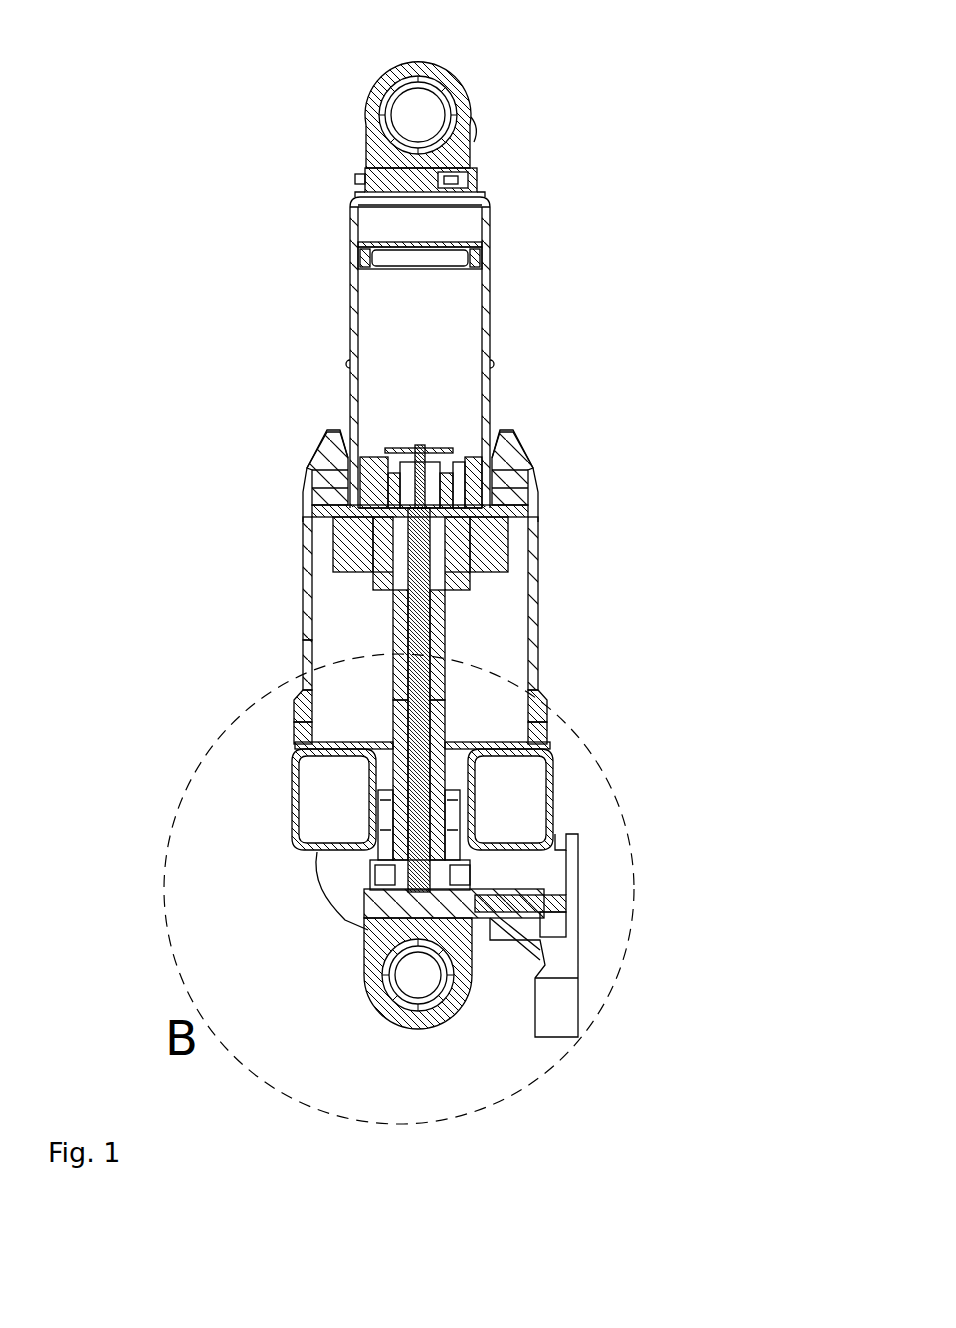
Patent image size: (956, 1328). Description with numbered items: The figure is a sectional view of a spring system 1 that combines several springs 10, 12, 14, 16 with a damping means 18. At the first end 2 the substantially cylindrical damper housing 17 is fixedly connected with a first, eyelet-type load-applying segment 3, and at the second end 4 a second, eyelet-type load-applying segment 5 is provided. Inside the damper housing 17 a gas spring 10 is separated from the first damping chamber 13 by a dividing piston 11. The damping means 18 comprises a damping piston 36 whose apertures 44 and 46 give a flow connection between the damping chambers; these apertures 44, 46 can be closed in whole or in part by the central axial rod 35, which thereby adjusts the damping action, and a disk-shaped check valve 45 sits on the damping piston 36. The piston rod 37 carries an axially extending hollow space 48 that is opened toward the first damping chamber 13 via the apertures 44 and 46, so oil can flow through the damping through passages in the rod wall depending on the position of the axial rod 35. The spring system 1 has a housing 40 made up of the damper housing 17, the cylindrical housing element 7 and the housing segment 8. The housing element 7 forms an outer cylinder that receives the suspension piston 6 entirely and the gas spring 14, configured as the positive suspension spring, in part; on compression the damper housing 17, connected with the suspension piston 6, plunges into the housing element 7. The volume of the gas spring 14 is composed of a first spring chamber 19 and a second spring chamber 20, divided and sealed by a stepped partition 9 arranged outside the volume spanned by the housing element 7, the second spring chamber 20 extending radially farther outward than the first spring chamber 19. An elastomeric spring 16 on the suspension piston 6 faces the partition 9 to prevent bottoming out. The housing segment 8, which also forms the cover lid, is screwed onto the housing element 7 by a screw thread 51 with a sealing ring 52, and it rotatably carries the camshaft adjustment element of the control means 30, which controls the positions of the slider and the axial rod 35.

The spring system 1 is at (222, 95).
The first end 2 is at (360, 78).
The first eyelet-type load-applying segment 3 is at (380, 55).
The second end 4 is at (350, 1020).
The second eyelet-type load-applying segment 5 is at (370, 1045).
The suspension piston 6 is at (515, 512).
The housing element 7 is at (300, 625).
The housing segment 8 is at (280, 846).
The partition 9 is at (360, 775).
The gas spring 10 is at (382, 227).
The dividing piston 11 is at (460, 263).
The spring 12 is at (320, 480).
The first damping chamber 13 is at (373, 328).
The gas spring 14 is at (325, 580).
The elastomeric spring 16 is at (500, 575).
The damper housing 17 is at (345, 362).
The damping means 18 is at (287, 273).
The first spring chamber 19 is at (313, 668).
The second spring chamber 20 is at (315, 795).
The control means 30 is at (605, 909).
The axial rod 35 is at (470, 690).
The damping piston 36 is at (370, 455).
The piston rod 37 is at (445, 637).
The housing 40 is at (183, 462).
The aperture 44 is at (455, 448).
The check valve 45 is at (430, 445).
The aperture 46 is at (385, 447).
The hollow space 48 is at (405, 633).
The screw thread 51 is at (300, 700).
The sealing ring 52 is at (305, 720).